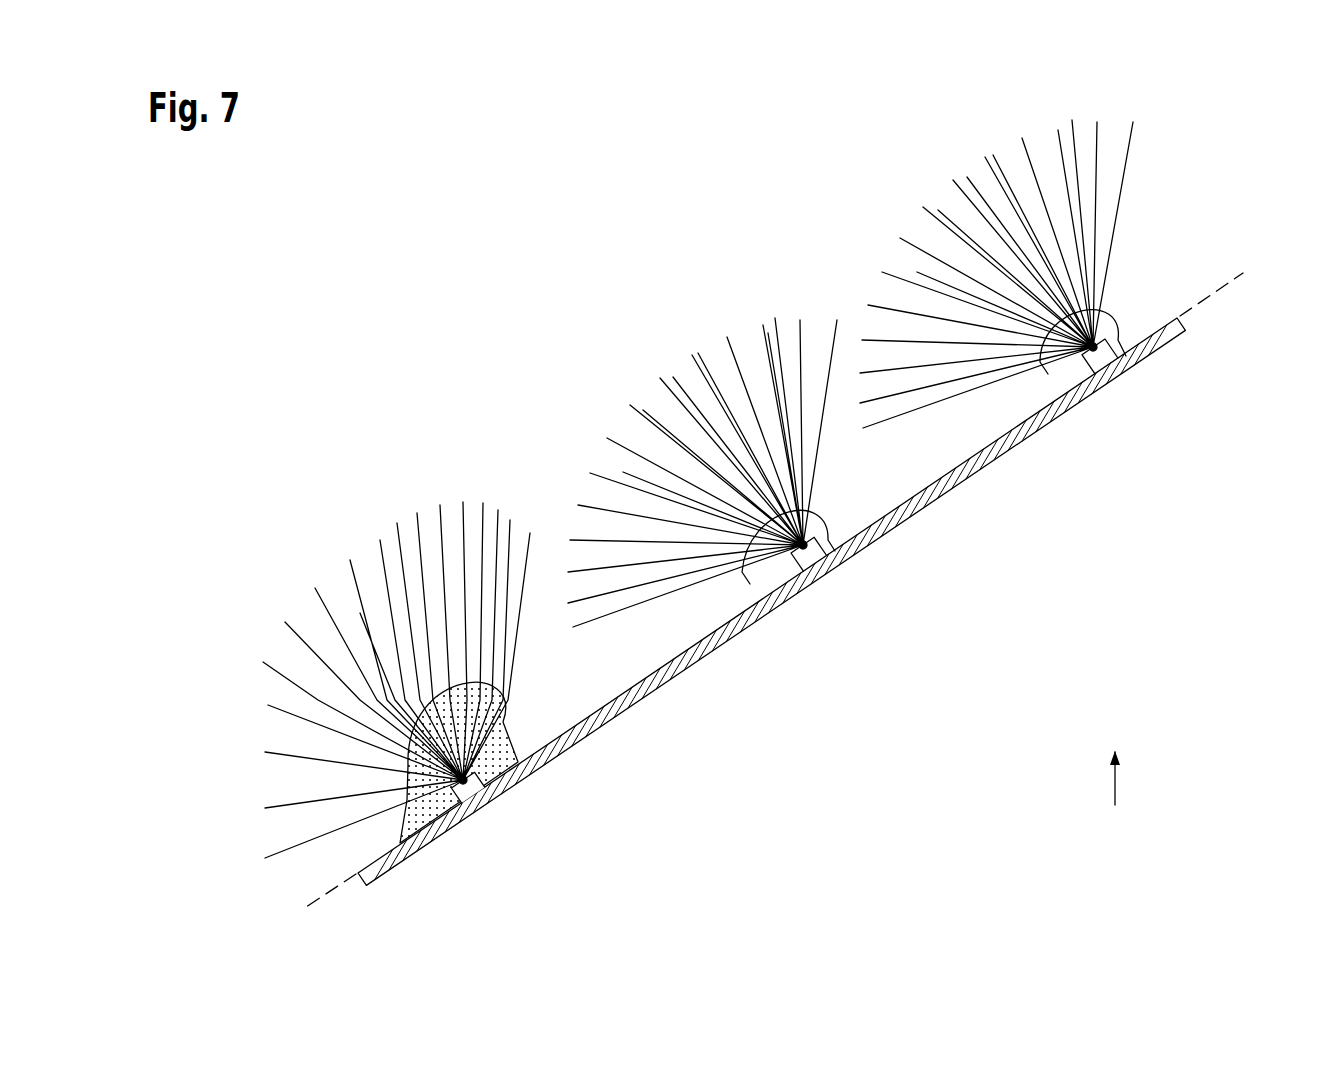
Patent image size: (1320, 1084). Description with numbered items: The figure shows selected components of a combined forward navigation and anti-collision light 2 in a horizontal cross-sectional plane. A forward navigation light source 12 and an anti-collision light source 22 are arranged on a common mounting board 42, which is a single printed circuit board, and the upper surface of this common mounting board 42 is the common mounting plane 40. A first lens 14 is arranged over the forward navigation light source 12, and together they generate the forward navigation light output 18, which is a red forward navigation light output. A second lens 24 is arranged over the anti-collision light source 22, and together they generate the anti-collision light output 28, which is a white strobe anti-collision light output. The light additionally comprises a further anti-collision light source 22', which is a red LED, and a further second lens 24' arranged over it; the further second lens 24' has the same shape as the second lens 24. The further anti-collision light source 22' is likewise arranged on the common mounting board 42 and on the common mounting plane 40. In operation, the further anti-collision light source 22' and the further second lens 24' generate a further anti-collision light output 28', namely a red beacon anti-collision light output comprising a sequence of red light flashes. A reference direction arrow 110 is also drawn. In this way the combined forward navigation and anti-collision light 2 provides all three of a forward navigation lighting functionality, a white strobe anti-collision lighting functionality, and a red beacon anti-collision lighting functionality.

The combined forward navigation and anti-collision light 2 is at (408, 326).
The forward navigation light source 12 is at (480, 788).
The first lens 14 is at (503, 760).
The forward navigation light output 18 is at (368, 508).
The anti-collision light source 22 is at (824, 595).
The second lens 24 is at (817, 572).
The further anti-collision light source 22' is at (1117, 397).
The further second lens 24' is at (1116, 372).
The anti-collision light output 28 is at (730, 445).
The further anti-collision light output 28' is at (1026, 287).
The common mounting plane 40 is at (1232, 283).
The common mounting board 42 is at (965, 473).
The main emission direction 110 is at (1116, 771).